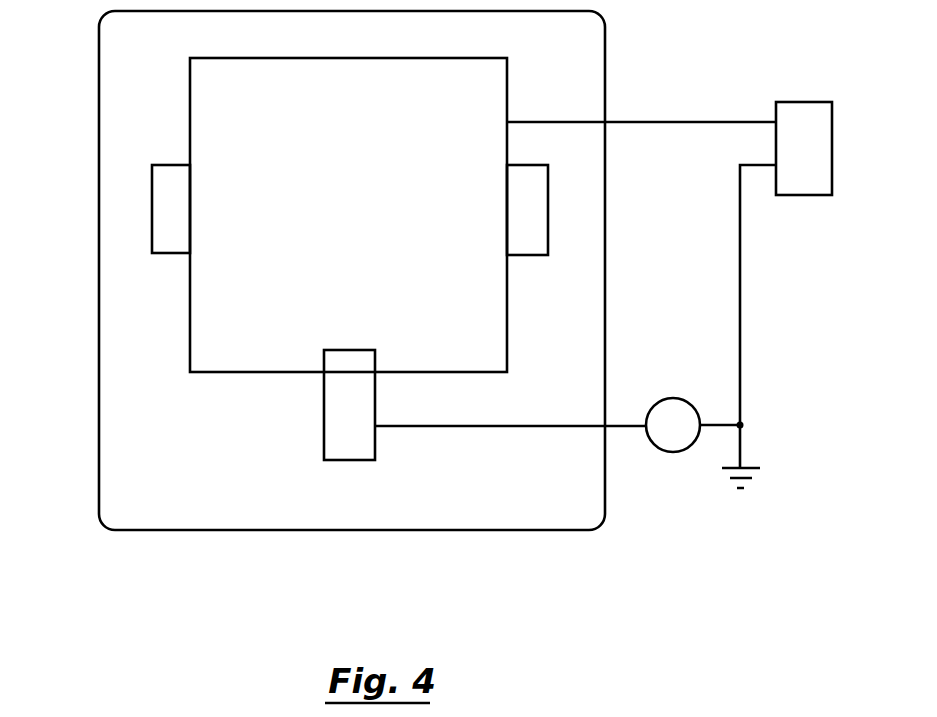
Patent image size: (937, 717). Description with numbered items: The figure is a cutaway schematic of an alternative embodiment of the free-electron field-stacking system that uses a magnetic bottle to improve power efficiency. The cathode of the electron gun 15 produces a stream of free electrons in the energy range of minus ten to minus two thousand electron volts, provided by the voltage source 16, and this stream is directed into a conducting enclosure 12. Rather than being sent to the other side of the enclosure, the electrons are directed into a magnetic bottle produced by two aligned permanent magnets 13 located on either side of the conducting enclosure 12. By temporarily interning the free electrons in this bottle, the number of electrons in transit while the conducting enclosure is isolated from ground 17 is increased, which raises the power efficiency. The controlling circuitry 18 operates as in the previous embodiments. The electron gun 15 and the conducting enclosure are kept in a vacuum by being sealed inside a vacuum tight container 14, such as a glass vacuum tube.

The conducting enclosure 12 is at (190, 110).
The aligned permanent magnets 13 is at (152, 197).
The vacuum tight container 14 is at (99, 367).
The electron gun 15 is at (324, 403).
The voltage source 16 is at (668, 448).
The ground 17 is at (747, 477).
The controlling circuitry 18 is at (793, 195).